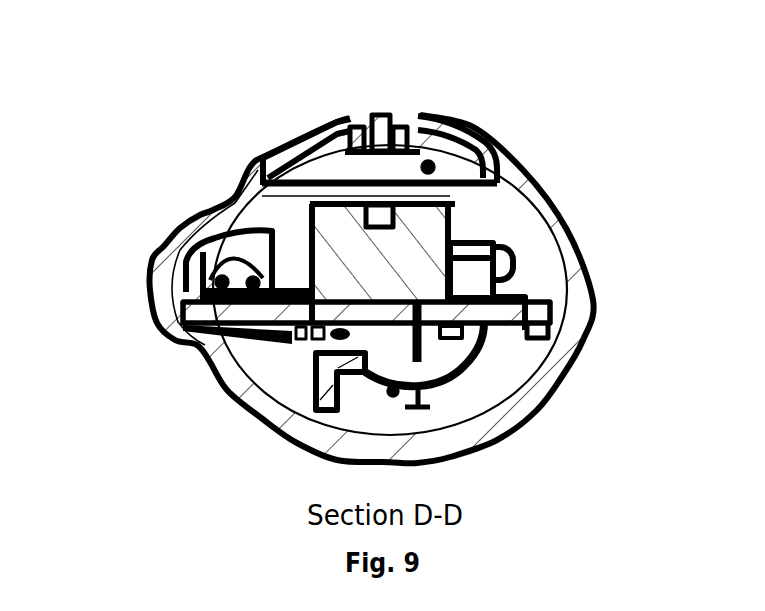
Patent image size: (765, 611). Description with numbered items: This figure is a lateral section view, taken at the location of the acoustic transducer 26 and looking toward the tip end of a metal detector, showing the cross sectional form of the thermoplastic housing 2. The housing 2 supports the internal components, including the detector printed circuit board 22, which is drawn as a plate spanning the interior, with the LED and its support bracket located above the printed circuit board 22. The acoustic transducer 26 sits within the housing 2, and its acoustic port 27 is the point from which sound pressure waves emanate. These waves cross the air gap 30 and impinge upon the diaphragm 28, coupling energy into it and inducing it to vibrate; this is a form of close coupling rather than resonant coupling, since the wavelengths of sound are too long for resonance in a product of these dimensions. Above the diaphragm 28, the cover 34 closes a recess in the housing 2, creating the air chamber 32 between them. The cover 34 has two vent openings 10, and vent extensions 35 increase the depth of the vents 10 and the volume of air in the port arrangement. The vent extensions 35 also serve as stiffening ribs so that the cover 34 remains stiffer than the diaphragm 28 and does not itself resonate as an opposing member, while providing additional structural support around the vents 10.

The housing 2 is at (500, 428).
The vent openings 10 is at (398, 108).
The detector printed circuit board 22 is at (289, 338).
The acoustic transducer 26 is at (450, 234).
The acoustic port 27 is at (395, 221).
The diaphragm 28 is at (463, 182).
The air gap 30 is at (462, 205).
The air chamber 32 is at (430, 165).
The cover 34 is at (313, 123).
The vent extensions 35 is at (283, 140).